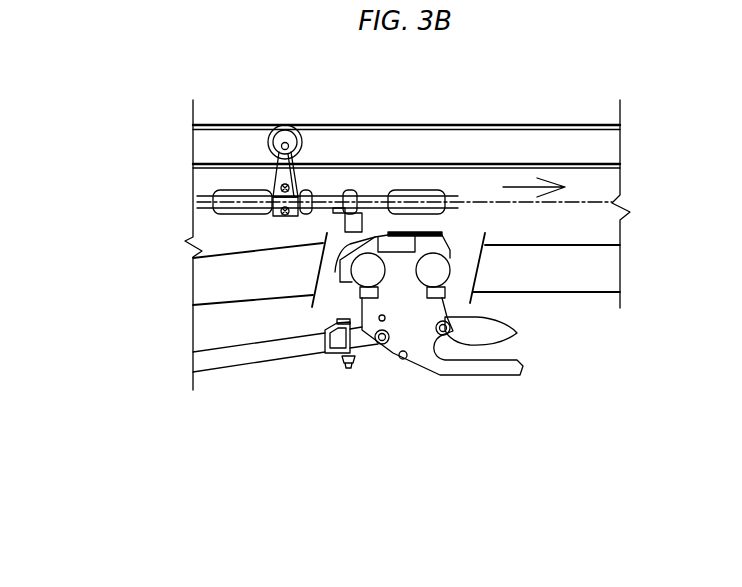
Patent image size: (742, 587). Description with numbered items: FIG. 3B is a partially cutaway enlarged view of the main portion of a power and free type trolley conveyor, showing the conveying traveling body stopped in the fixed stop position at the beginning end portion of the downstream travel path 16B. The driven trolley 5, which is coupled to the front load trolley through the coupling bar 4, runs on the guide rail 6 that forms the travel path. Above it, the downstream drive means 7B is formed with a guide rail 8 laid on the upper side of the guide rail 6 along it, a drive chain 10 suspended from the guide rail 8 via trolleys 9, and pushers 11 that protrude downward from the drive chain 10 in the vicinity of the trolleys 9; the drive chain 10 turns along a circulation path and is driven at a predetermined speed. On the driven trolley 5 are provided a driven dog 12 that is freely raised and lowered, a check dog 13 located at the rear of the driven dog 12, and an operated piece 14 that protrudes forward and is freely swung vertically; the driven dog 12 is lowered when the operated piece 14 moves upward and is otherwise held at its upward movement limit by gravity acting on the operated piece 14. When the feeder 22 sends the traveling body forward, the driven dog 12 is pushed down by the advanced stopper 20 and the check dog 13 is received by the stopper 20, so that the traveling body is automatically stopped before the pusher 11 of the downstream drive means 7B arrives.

The coupling bar 4 is at (276, 352).
The driven trolley 5 is at (405, 327).
The guide rail 6 is at (603, 267).
The downstream drive means 7B is at (558, 122).
The guide rail 8 is at (492, 145).
The trolley 9 is at (283, 123).
The drive chain 10 is at (243, 190).
The pusher 11 is at (356, 224).
The driven dog 12 is at (430, 249).
The check dog 13 is at (322, 268).
The operated piece 14 is at (493, 330).
The downstream travel path 16B is at (232, 248).
The stopper 20 is at (410, 232).
The feeder 22 is at (235, 303).